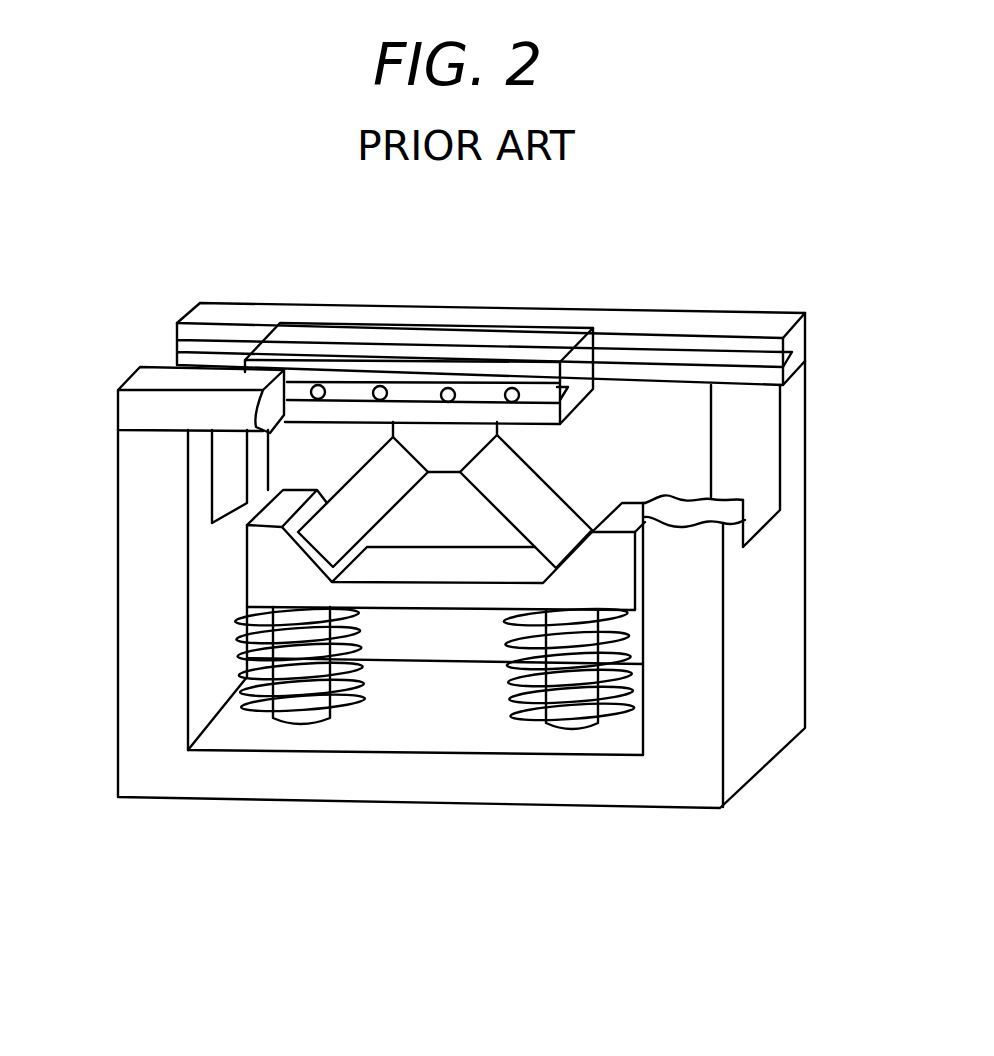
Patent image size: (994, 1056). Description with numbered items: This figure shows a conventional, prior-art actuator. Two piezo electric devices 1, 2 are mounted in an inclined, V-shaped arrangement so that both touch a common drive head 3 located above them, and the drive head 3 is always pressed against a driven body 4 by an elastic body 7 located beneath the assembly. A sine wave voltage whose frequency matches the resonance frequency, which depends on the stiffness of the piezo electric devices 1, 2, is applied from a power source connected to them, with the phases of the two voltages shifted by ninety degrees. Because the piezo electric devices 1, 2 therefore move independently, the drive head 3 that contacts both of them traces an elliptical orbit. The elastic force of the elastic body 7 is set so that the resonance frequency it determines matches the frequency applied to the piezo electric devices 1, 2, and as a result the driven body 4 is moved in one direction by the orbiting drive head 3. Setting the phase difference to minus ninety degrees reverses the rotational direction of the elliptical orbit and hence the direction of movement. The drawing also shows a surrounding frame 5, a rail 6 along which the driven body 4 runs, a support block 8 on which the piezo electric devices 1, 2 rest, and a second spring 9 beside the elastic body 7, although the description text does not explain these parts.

The piezo electric device 1 is at (360, 498).
The piezo electric device 2 is at (533, 487).
The drive head 3 is at (465, 437).
The driven body 4 is at (310, 337).
The housing frame 5 is at (795, 598).
The guide rail 6 is at (665, 318).
The elastic body 7 is at (337, 703).
The support block with V-groove 8 is at (618, 577).
The coil spring 9 is at (587, 703).